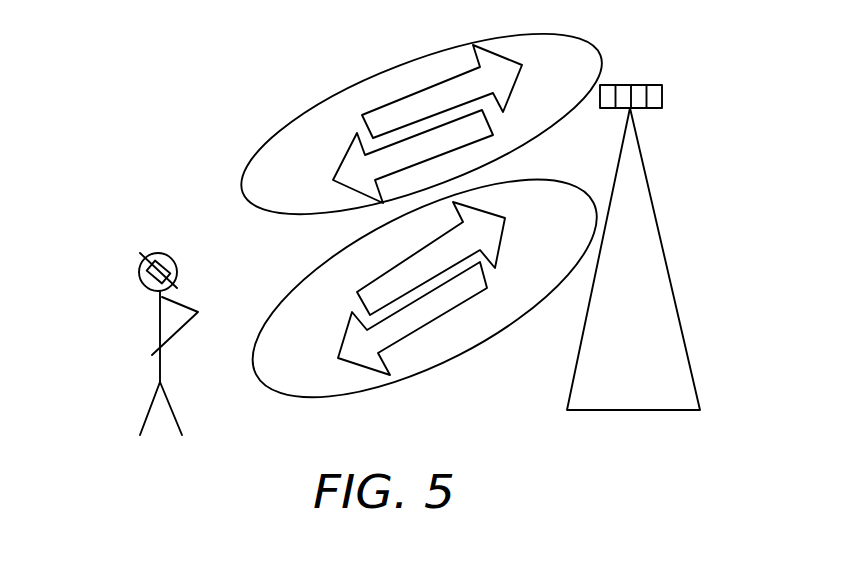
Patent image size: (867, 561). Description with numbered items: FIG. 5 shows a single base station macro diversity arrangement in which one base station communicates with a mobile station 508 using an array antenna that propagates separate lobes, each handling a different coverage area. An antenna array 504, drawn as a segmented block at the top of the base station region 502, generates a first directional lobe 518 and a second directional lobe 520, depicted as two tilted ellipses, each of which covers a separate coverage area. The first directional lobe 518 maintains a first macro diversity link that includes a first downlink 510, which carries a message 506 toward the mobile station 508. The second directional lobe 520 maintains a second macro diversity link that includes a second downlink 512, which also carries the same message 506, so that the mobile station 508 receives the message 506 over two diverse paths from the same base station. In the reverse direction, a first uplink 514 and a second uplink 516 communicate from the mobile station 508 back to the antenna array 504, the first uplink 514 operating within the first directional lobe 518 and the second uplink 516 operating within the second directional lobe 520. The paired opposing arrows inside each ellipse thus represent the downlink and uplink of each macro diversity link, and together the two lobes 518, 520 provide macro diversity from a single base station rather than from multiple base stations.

The base station coverage beam 502 is at (630, 412).
The antenna array 504 is at (664, 97).
The message 506 is at (431, 208).
The mobile station 508 is at (140, 273).
The first downlink 510 is at (473, 144).
The second downlink 512 is at (447, 313).
The first uplink 514 is at (425, 88).
The second uplink 516 is at (377, 275).
The first directional lobe 518 is at (242, 172).
The second directional lobe 520 is at (262, 366).